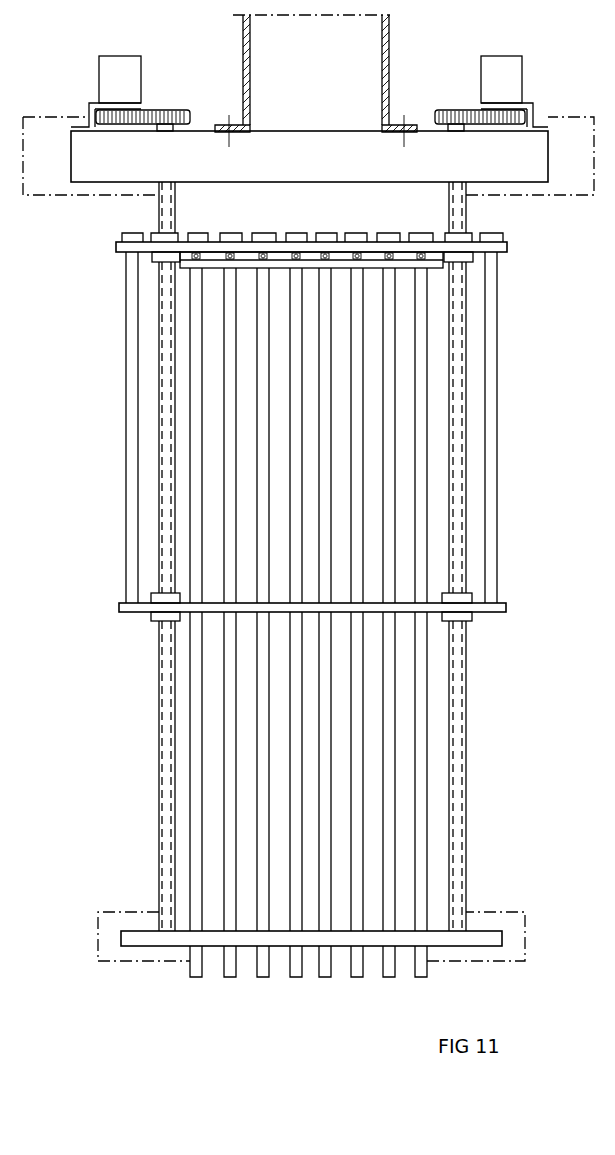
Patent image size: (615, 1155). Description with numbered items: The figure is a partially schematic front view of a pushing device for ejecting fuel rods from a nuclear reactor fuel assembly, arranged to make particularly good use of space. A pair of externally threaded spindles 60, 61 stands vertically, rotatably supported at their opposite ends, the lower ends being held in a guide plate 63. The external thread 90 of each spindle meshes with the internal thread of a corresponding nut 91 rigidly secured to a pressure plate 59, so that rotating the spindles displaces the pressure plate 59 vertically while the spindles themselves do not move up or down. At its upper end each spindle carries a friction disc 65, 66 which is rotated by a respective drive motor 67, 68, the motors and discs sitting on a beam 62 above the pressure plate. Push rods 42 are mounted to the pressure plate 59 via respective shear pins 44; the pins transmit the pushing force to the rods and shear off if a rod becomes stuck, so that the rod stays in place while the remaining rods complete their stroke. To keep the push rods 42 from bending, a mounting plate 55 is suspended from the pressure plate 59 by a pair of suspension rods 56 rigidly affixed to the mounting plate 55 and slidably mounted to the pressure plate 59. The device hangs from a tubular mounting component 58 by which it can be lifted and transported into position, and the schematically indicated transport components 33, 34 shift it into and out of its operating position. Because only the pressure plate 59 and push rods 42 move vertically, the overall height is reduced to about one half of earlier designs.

The transport component 33 is at (46, 195).
The transport component 34 is at (98, 912).
The push rods 42 is at (387, 1003).
The shear pins 44 is at (265, 256).
The mounting plate 55 is at (506, 607).
The suspension rods 56 is at (126, 465).
The tubular mounting component 58 is at (389, 42).
The pressure plate 59 is at (507, 246).
The externally threaded spindle 60 is at (163, 131).
The externally threaded spindle 61 is at (456, 131).
The cross beam 62 is at (98, 168).
The guide plate 63 is at (483, 935).
The friction disc 65 is at (170, 110).
The friction disc 66 is at (465, 110).
The drive motor 67 is at (107, 78).
The drive motor 68 is at (522, 78).
The external thread 90 is at (463, 320).
The nut 91 is at (446, 232).